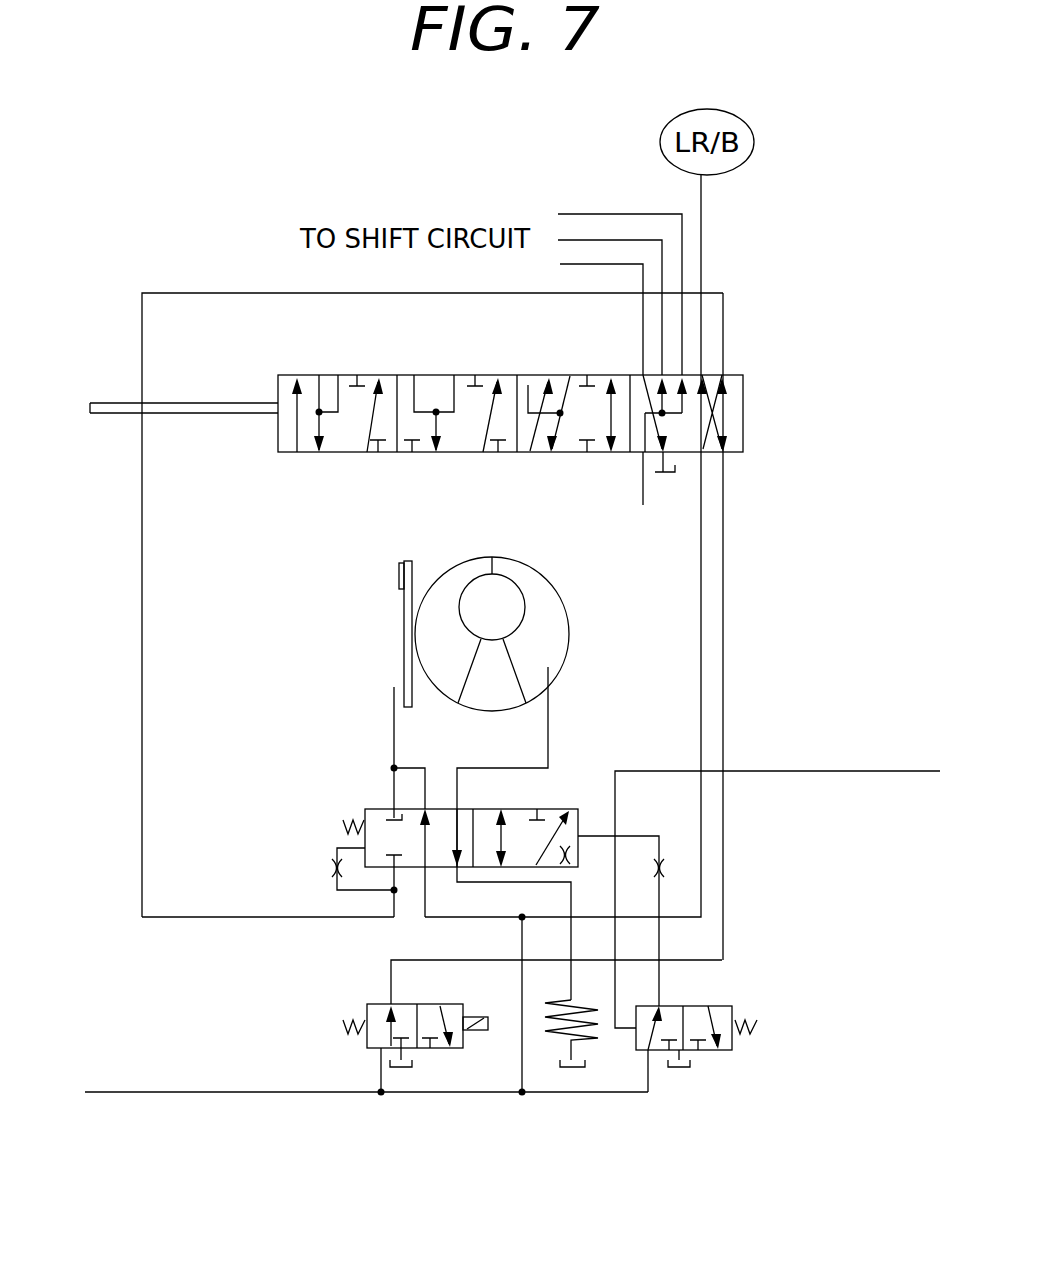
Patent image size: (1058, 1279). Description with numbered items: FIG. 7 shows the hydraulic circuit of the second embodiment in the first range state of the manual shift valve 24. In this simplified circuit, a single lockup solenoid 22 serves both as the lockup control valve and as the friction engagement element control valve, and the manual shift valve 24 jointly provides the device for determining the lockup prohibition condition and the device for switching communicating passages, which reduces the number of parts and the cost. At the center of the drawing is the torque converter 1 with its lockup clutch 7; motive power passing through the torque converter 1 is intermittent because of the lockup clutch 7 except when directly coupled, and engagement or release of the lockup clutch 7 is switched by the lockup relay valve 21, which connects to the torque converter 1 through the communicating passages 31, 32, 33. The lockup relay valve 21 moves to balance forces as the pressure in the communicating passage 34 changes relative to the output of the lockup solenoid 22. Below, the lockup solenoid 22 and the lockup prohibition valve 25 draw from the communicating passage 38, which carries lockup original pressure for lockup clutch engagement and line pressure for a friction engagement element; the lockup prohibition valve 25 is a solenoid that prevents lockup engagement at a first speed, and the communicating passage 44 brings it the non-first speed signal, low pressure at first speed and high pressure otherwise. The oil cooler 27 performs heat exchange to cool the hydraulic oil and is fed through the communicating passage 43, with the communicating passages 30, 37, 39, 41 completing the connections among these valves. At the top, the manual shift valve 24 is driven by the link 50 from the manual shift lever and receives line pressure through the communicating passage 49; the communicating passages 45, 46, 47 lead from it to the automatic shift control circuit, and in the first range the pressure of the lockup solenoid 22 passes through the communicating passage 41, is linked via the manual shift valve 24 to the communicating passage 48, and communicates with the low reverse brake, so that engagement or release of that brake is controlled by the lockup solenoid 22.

The torque converter 1 is at (458, 585).
The lockup clutch 7 is at (400, 573).
The lockup relay valve 21 is at (365, 809).
The lockup solenoid 22 is at (367, 1004).
The manual shift valve 24 is at (743, 450).
The lockup prohibition valve 25 is at (732, 1008).
The oil cooler 27 is at (583, 1040).
The communicating passage 30 is at (659, 945).
The communicating passage 31 is at (394, 742).
The communicating passage 32 is at (416, 768).
The communicating passage 33 is at (548, 742).
The communicating passage 34 is at (337, 855).
The communicating passage 37 is at (381, 1065).
The communicating passage 38 is at (308, 1095).
The communicating passage 39 is at (522, 1066).
The communicating passage 41 is at (391, 958).
The communicating passage 43 is at (578, 945).
The communicating passage 44 is at (627, 1001).
The communicating passage 45 is at (560, 264).
The communicating passage 46 is at (563, 238).
The communicating passage 47 is at (578, 214).
The communicating passage 48 is at (702, 258).
The communicating passage 49 is at (643, 486).
The link 50 is at (208, 415).